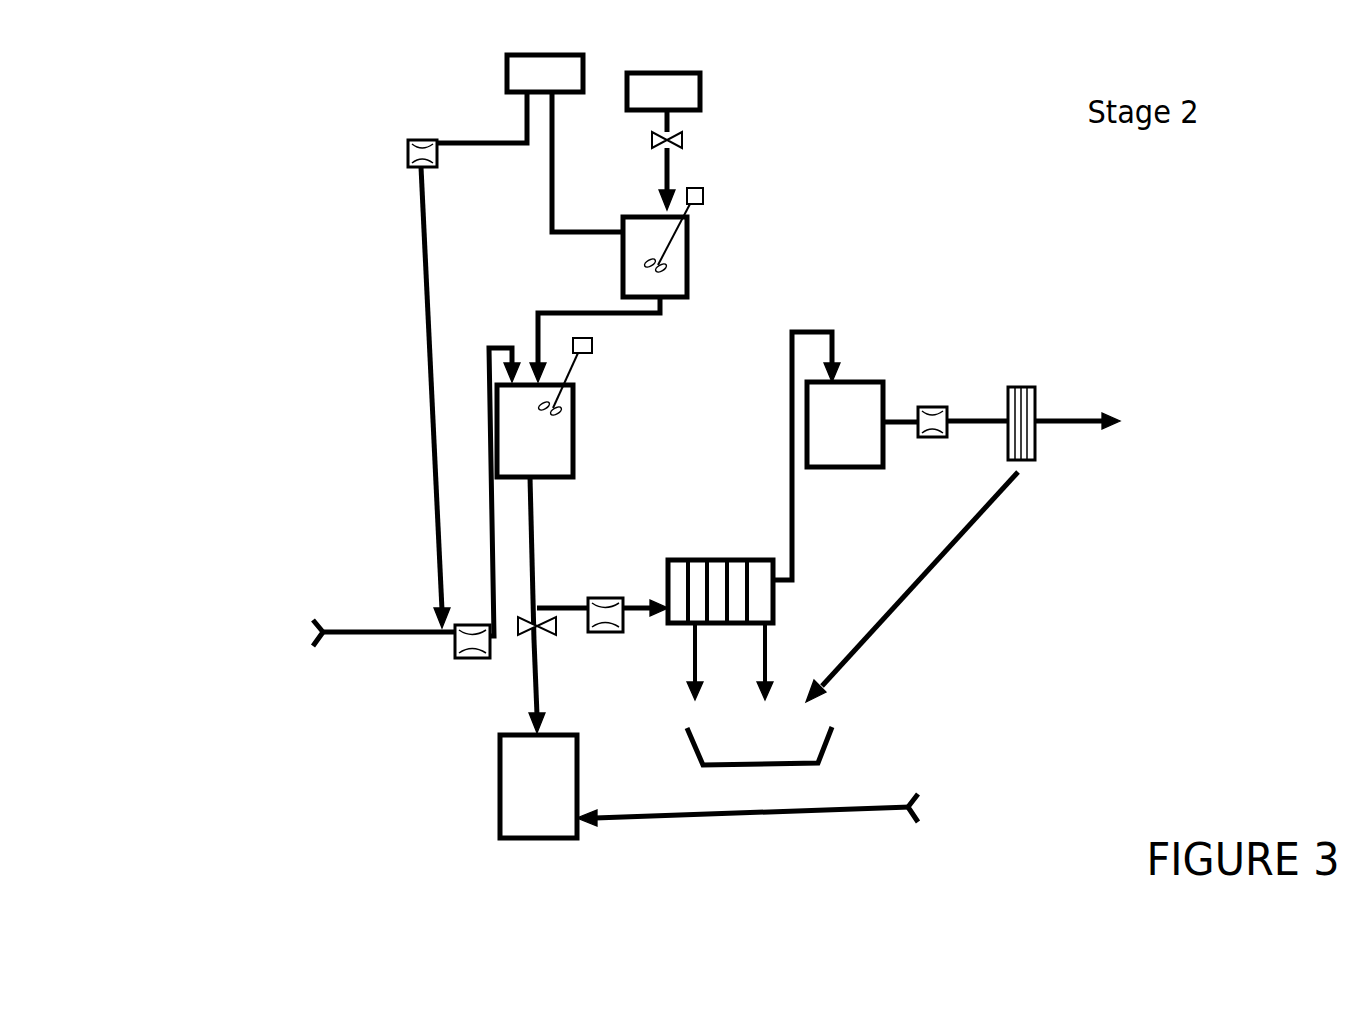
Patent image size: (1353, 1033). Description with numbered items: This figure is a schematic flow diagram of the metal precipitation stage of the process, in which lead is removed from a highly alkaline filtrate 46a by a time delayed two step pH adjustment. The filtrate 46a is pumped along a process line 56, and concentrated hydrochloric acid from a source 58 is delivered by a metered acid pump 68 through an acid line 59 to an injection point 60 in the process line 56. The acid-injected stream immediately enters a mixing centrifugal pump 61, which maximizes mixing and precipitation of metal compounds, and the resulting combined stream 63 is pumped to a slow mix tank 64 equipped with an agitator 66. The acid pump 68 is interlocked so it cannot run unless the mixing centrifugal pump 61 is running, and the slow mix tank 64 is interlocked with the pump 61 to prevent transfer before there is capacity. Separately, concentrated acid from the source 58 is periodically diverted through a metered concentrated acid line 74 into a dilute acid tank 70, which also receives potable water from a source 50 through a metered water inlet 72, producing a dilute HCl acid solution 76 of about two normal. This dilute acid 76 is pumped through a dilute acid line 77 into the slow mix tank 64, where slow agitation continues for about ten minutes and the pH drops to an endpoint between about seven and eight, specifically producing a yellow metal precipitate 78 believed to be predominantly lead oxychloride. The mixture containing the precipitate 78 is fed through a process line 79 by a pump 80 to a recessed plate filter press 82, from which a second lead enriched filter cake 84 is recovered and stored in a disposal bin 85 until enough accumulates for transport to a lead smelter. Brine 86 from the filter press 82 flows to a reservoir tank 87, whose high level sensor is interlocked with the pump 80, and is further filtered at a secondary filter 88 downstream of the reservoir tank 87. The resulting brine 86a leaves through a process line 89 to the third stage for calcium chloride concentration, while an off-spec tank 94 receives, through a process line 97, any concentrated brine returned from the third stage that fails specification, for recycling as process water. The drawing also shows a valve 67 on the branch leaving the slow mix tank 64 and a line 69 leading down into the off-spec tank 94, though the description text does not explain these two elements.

The filtrate 46a is at (328, 620).
The potable water source 50 is at (652, 86).
The process line 56 is at (390, 635).
The concentrated HCl source 58 is at (522, 68).
The acid line 59 is at (470, 138).
The injection point 60 is at (443, 623).
The mixing centrifugal pump 61 is at (453, 648).
The combined stream 63 is at (485, 458).
The slow mix tank 64 is at (573, 460).
The agitator 66 is at (563, 408).
The valve 67 is at (545, 628).
The metered acid pump 68 is at (408, 154).
The line to tank 69 is at (535, 702).
The dilute acid tank 70 is at (687, 262).
The metered water inlet 72 is at (685, 142).
The metered concentrated acid line 74 is at (586, 225).
The dilute HCl acid solution 76 is at (645, 245).
The dilute acid line 77 is at (610, 318).
The yellow metal precipitate 78 is at (535, 448).
The process line 79 is at (560, 607).
The pump 80 is at (598, 597).
The recessed plate filter press 82 is at (720, 558).
The second lead enriched filter cake 84 is at (697, 653).
The disposal bin 85 is at (830, 747).
The brine 86 is at (791, 328).
The brine 86a is at (1117, 388).
The reservoir tank 87 is at (875, 378).
The secondary filter 88 is at (1023, 388).
The process line 89 is at (1070, 412).
The off-spec tank 94 is at (500, 793).
The process line 97 is at (717, 815).